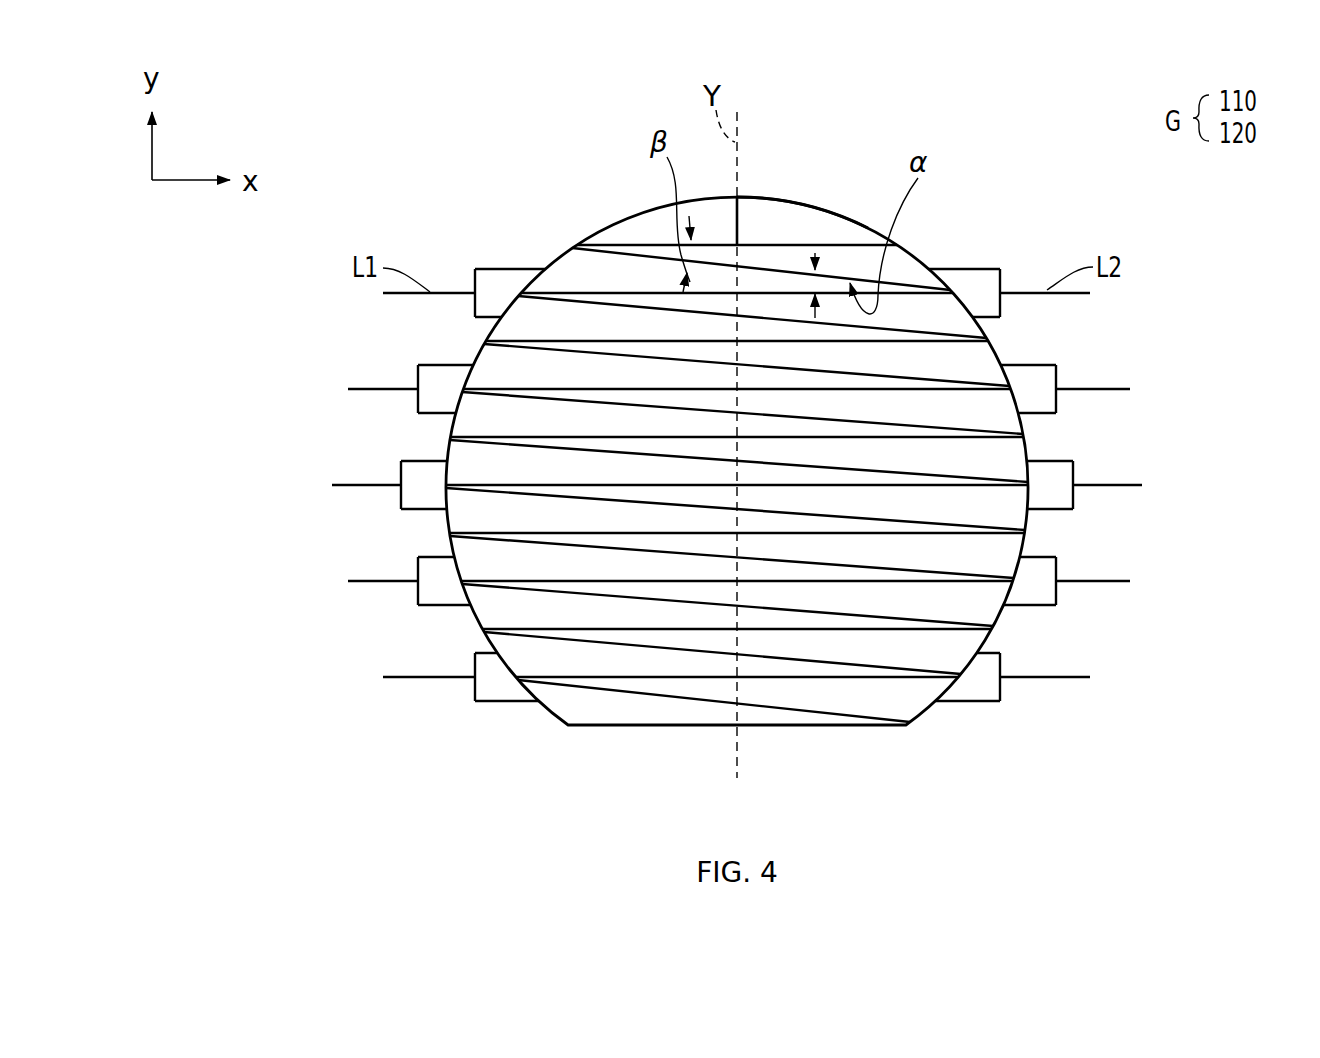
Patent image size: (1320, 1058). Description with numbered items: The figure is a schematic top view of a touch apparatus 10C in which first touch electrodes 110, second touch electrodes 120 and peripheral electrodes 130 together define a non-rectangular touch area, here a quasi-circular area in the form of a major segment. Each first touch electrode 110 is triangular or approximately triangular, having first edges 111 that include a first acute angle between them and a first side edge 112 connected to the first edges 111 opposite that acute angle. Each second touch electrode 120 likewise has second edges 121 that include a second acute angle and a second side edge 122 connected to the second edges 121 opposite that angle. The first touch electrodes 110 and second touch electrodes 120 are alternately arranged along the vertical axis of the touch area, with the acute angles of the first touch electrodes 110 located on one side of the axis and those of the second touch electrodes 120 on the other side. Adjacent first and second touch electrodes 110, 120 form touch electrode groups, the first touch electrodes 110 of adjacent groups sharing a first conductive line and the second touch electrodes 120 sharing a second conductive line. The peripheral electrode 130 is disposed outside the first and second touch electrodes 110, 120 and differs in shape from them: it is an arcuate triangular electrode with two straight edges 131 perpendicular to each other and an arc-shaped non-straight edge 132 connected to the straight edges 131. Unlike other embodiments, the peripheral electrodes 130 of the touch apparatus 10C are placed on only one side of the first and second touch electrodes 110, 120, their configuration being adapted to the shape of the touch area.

The touch apparatus 10C is at (1158, 782).
The first touch electrode 110 is at (557, 265).
The first edges 111 is at (682, 295).
The first side edge 112 is at (532, 268).
The second touch electrode 120 is at (962, 277).
The second edges 121 is at (905, 310).
The second side edge 122 is at (939, 270).
The peripheral electrode 130 is at (663, 222).
The straight edge 131 is at (801, 247).
The non-straight edge 132 is at (801, 199).